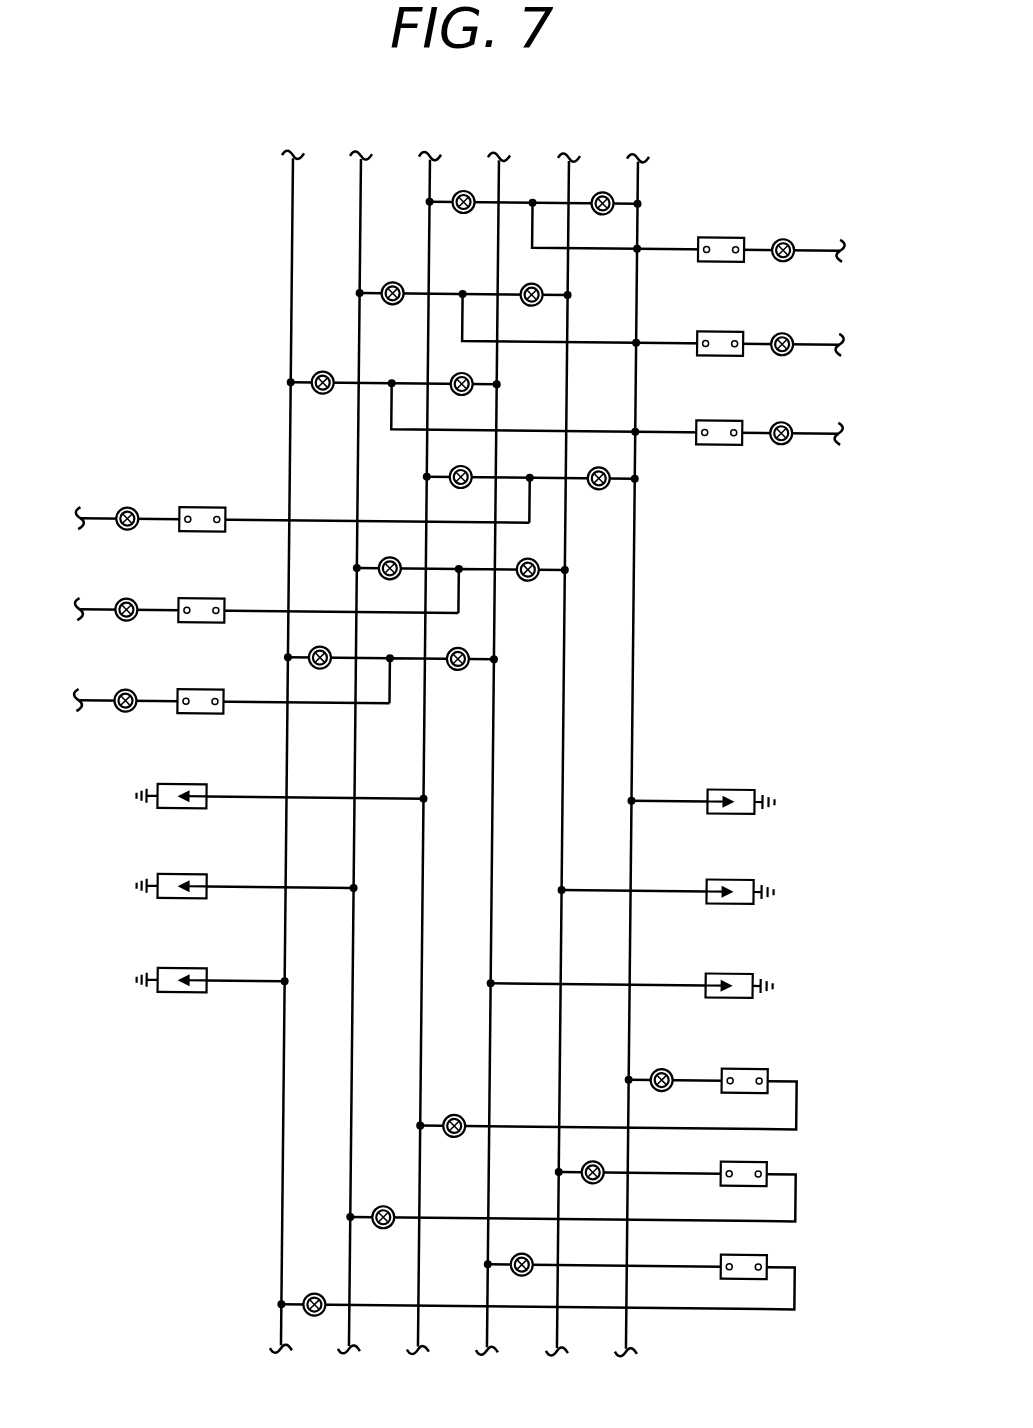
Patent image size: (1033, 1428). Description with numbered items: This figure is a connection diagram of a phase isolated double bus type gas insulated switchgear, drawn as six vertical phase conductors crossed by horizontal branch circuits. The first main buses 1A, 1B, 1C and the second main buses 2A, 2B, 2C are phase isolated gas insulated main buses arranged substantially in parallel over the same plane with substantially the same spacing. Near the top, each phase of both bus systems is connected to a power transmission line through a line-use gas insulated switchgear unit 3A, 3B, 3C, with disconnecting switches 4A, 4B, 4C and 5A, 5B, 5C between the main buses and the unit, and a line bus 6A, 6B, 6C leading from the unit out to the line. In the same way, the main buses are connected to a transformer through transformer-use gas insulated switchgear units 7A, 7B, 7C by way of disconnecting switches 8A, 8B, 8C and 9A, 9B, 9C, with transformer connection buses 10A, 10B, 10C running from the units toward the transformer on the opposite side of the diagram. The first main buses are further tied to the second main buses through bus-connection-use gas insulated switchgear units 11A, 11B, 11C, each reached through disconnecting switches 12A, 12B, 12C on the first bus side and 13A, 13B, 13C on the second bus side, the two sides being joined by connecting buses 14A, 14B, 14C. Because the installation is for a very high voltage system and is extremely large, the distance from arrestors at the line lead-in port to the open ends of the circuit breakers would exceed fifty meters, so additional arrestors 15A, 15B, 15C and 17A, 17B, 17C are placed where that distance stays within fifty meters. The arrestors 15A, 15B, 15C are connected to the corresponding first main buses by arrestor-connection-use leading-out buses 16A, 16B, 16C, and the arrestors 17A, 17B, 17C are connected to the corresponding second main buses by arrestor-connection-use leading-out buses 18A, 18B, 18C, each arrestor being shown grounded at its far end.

The first main bus 1A is at (634, 175).
The first main bus 1B is at (565, 175).
The first main bus 1C is at (495, 175).
The second main bus 2A is at (426, 175).
The second main bus 2B is at (357, 175).
The second main bus 2C is at (289, 175).
The line-use gas insulated switchgear unit 3A is at (728, 237).
The line-use gas insulated switchgear unit 3B is at (728, 331).
The line-use gas insulated switchgear unit 3C is at (728, 420).
The disconnecting switch 4A is at (598, 194).
The disconnecting switch 4B is at (533, 285).
The disconnecting switch 4C is at (464, 375).
The disconnecting switch 5A is at (458, 214).
The disconnecting switch 5B is at (388, 305).
The disconnecting switch 5C is at (319, 395).
The line bus 6A is at (645, 247).
The line bus 6B is at (645, 341).
The line bus 6C is at (645, 430).
The transformer-use gas insulated switchgear unit 7A is at (200, 510).
The transformer-use gas insulated switchgear unit 7B is at (200, 601).
The transformer-use gas insulated switchgear unit 7C is at (200, 692).
The disconnecting switch 8A is at (596, 488).
The disconnecting switch 8B is at (527, 580).
The disconnecting switch 8C is at (457, 670).
The disconnecting switch 9A is at (466, 470).
The disconnecting switch 9B is at (389, 558).
The disconnecting switch 9C is at (320, 648).
The transformer connection bus 10A is at (275, 522).
The transformer connection bus 10B is at (275, 613).
The transformer connection bus 10C is at (275, 704).
The bus-connection-use gas insulated switchgear unit 11A is at (770, 1066).
The bus-connection-use gas insulated switchgear unit 11B is at (770, 1161).
The bus-connection-use gas insulated switchgear unit 11C is at (770, 1253).
The disconnecting switch 12A is at (668, 1067).
The disconnecting switch 12B is at (598, 1160).
The disconnecting switch 12C is at (527, 1253).
The disconnecting switch 13A is at (458, 1115).
The disconnecting switch 13B is at (388, 1207).
The disconnecting switch 13C is at (320, 1295).
The connecting bus 14A is at (505, 1126).
The connecting bus 14B is at (445, 1218).
The connecting bus 14C is at (375, 1306).
The arrestor 15A is at (745, 787).
The arrestor 15B is at (745, 877).
The arrestor 15C is at (745, 971).
The arrestor-connection-use leading-out bus 16A is at (655, 799).
The arrestor-connection-use leading-out bus 16B is at (655, 889).
The arrestor-connection-use leading-out bus 16C is at (655, 983).
The arrestor 17A is at (160, 787).
The arrestor 17B is at (160, 877).
The arrestor 17C is at (160, 971).
The arrestor-connection-use leading-out bus 18A is at (258, 799).
The arrestor-connection-use leading-out bus 18B is at (258, 889).
The arrestor-connection-use leading-out bus 18C is at (258, 983).